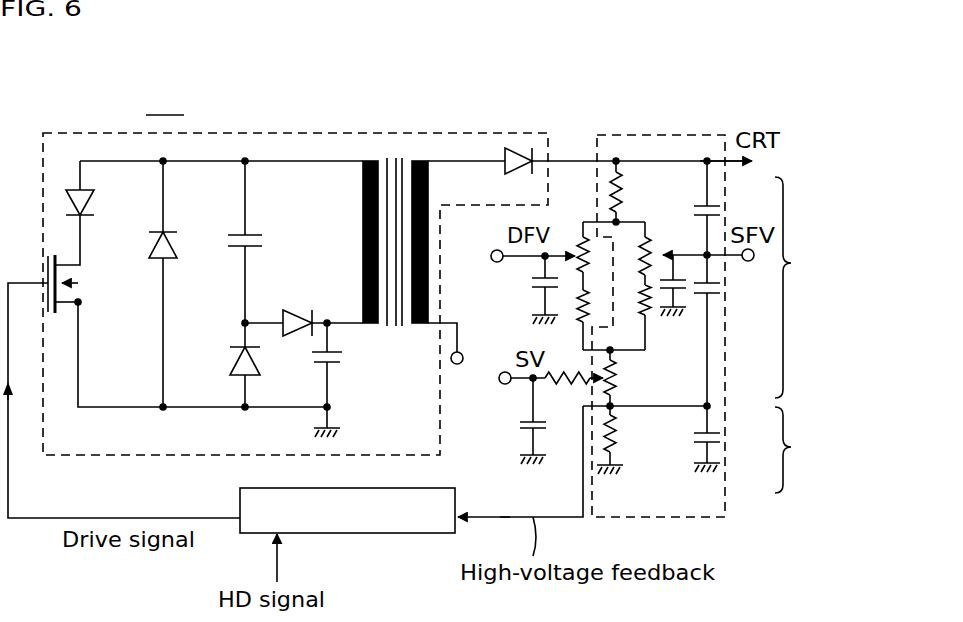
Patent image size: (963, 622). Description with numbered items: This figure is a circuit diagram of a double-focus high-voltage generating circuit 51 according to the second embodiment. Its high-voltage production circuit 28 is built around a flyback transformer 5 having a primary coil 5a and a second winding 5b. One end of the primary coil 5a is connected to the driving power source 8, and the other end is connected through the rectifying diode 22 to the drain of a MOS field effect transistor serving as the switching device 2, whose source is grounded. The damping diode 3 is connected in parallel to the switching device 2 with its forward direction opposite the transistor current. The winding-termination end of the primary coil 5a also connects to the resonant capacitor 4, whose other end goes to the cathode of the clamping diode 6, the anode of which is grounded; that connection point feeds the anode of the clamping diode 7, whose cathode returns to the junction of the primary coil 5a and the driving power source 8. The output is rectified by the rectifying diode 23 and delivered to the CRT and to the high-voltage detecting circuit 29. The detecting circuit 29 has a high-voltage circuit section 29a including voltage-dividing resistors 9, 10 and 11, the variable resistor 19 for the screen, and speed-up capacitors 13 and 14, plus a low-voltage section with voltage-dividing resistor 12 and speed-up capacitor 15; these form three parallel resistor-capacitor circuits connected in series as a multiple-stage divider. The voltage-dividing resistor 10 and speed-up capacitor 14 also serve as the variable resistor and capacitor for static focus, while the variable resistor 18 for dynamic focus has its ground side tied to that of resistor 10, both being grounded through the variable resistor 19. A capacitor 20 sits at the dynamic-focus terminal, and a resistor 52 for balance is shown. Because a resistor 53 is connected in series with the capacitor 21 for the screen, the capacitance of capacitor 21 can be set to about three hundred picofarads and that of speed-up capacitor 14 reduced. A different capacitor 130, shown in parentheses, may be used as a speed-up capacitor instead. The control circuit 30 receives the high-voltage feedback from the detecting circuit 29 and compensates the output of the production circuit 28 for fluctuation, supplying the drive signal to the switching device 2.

The switching device 2 is at (66, 305).
The damping diode 3 is at (148, 268).
The resonant capacitor 4 is at (254, 238).
The flyback transformer 5 is at (404, 146).
The primary coil 5a is at (363, 205).
The secondary winding 5b is at (430, 185).
The clamping diode 6 is at (232, 355).
The clamping diode 7 is at (290, 311).
The driving power source 8 is at (334, 364).
The voltage-dividing resistor 9 is at (622, 196).
The voltage-dividing resistor 10 is at (651, 250).
The voltage-dividing resistor 11 is at (648, 305).
The voltage-dividing resistor 12 is at (616, 428).
The speed-up capacitor 13 is at (712, 207).
The speed-up capacitor 14 is at (709, 298).
The speed-up capacitor 15 is at (712, 445).
The variable resistor for dynamic focus 18 is at (579, 240).
The variable resistor for screen 19 is at (618, 385).
The capacitor 20 is at (537, 288).
The capacitor for screen 21 is at (527, 422).
The rectifying diode 22 is at (94, 203).
The rectifying diode 23 is at (507, 148).
The high-voltage production circuit 28 is at (285, 133).
The high-voltage detecting circuit 29 is at (655, 135).
The high-voltage circuit section 29a is at (807, 335).
The control circuit 30 is at (340, 533).
The high-voltage generating circuit 51 is at (165, 102).
The resistor for balance 52 is at (575, 313).
The resistor 53 is at (557, 384).
The capacitor 130 is at (688, 300).